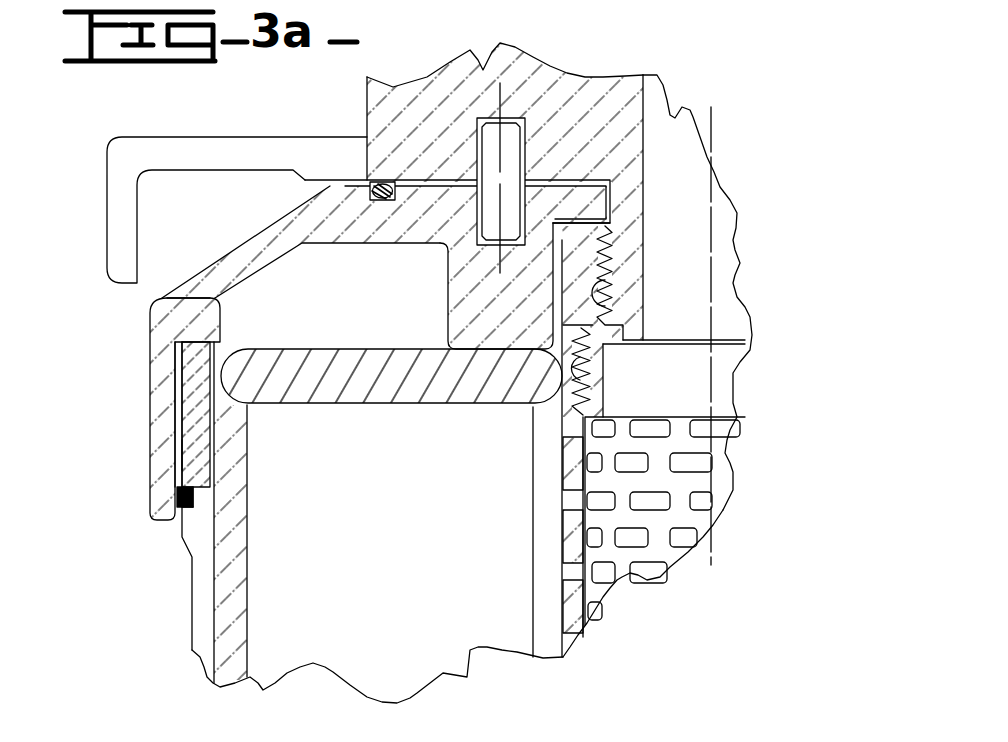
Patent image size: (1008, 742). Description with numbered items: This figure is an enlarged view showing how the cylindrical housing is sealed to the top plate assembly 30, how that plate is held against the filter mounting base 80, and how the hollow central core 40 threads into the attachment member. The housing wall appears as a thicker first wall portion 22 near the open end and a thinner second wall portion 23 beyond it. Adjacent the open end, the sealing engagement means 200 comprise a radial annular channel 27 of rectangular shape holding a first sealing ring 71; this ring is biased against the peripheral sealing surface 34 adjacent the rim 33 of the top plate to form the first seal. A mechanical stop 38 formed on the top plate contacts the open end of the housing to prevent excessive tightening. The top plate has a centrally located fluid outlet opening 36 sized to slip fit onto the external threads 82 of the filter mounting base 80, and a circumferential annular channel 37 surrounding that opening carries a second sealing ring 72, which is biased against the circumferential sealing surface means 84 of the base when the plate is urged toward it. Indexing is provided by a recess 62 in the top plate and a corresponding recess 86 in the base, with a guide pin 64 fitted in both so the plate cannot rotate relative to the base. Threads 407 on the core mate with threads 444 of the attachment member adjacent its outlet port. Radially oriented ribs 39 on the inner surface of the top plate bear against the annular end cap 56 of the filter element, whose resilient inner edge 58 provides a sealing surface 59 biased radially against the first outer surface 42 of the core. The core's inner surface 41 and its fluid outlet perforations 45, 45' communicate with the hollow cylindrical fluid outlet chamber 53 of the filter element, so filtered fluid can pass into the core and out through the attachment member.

The first wall portion 22 is at (193, 645).
The second wall portion 23 is at (200, 452).
The radial annular channel 27 is at (182, 493).
The top plate assembly 30 is at (170, 322).
The rim 33 is at (163, 527).
The peripheral sealing surface 34 is at (197, 510).
The fluid outlet opening 36 is at (610, 207).
The circumferential annular channel 37 is at (388, 181).
The mechanical stop 38 is at (207, 368).
The ribs 39 is at (600, 257).
The hollow central core 40 is at (653, 443).
The inner surface 41 is at (587, 557).
The first outer surface 42 is at (565, 528).
The threads 444 is at (603, 388).
The threads 407 is at (603, 407).
The fluid outlet perforation 45 is at (711, 475).
The fluid outlet perforation 45' is at (719, 510).
The hollow cylindrical fluid outlet chamber 53 is at (657, 518).
The annular end cap 56 is at (167, 303).
The resilient inner edge 58 is at (545, 397).
The sealing surface 59 is at (560, 365).
The recess 62 is at (445, 250).
The guide pin 64 is at (512, 137).
The first sealing ring 71 is at (200, 488).
The second sealing ring 72 is at (378, 200).
The filter mounting base 80 is at (608, 100).
The external threads 82 is at (648, 306).
The circumferential sealing surface means 84 is at (347, 190).
The recess 86 is at (470, 83).
The sealing engagement means 200 is at (215, 470).